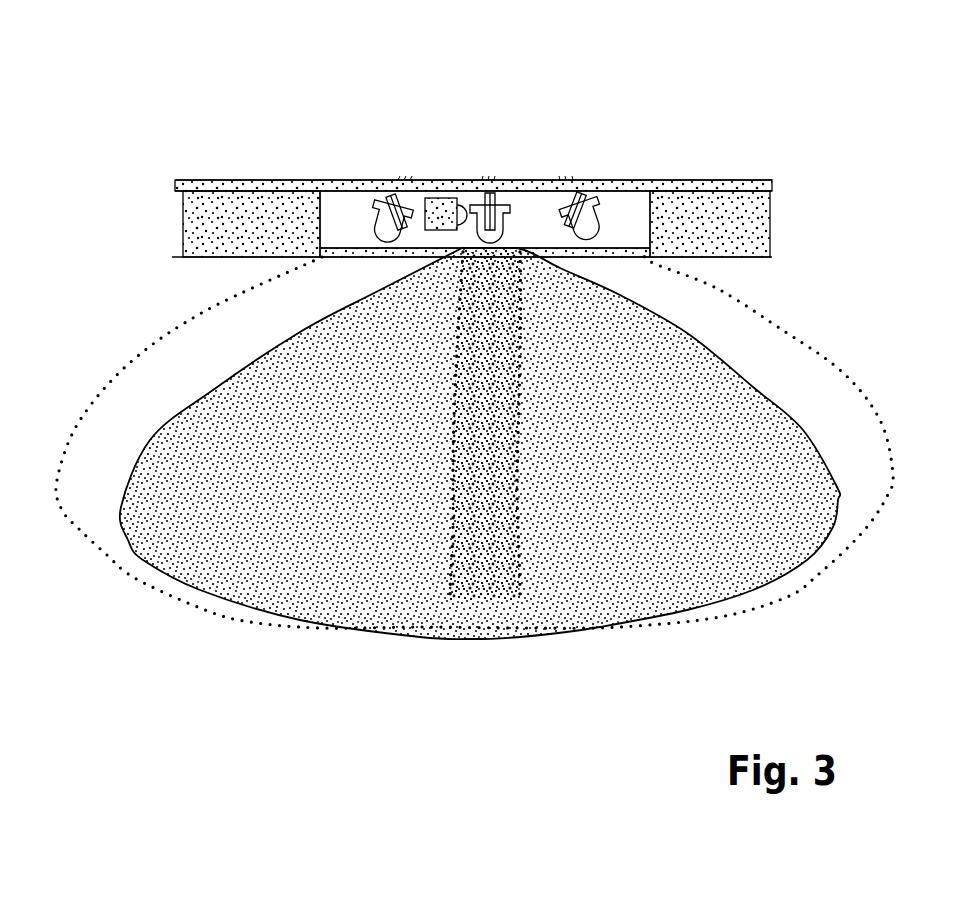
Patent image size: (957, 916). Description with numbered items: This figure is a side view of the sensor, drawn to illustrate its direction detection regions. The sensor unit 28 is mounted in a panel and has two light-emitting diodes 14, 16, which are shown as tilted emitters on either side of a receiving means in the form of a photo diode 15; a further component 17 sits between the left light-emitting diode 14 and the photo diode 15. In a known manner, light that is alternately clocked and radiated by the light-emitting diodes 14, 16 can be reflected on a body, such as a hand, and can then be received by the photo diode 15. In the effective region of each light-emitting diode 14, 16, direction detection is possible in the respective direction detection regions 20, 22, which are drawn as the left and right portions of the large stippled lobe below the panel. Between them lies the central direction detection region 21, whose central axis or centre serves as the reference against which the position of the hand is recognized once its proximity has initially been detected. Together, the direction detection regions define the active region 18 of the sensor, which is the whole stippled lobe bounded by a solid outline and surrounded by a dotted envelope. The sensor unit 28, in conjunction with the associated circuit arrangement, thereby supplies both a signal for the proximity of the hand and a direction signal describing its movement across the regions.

The light-emitting diode 14 is at (372, 200).
The photo diode 15 is at (470, 195).
The light-emitting diode 16 is at (597, 208).
The sensor electronics 17 is at (433, 203).
The active region 18 is at (515, 613).
The direction detection region 20 is at (293, 565).
The direction detection region 21 is at (483, 507).
The direction detection region 22 is at (692, 510).
The sensor unit 28 is at (546, 136).